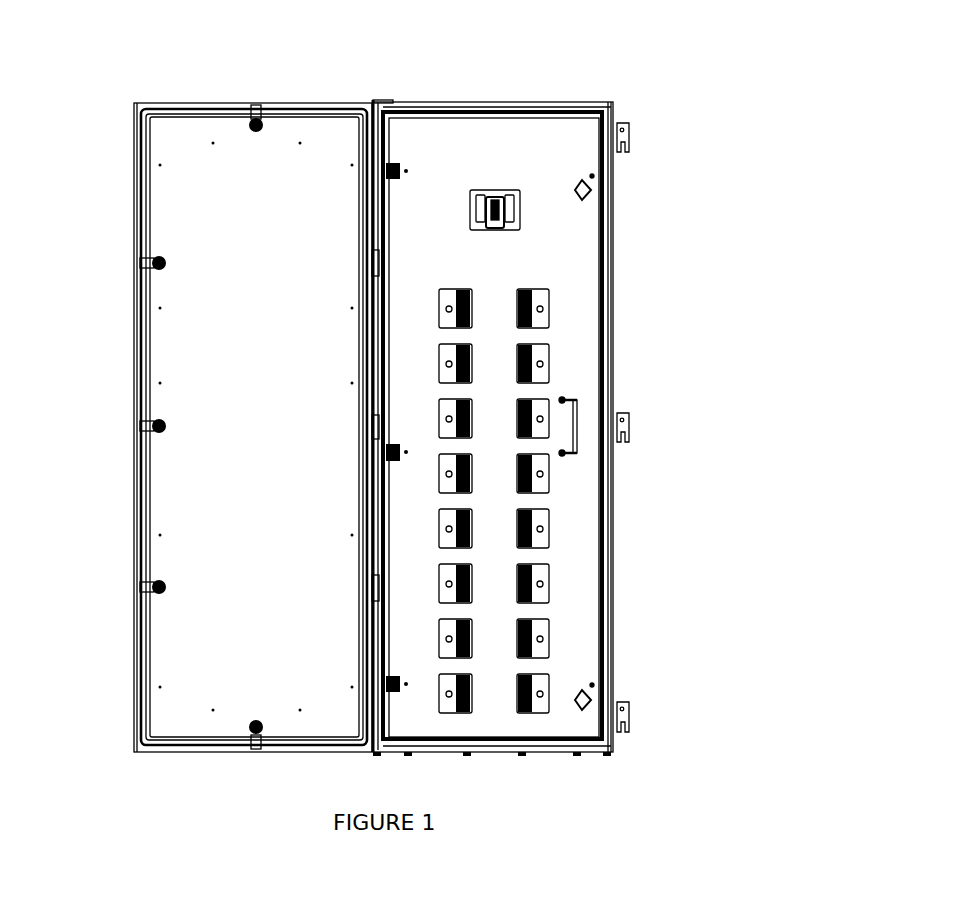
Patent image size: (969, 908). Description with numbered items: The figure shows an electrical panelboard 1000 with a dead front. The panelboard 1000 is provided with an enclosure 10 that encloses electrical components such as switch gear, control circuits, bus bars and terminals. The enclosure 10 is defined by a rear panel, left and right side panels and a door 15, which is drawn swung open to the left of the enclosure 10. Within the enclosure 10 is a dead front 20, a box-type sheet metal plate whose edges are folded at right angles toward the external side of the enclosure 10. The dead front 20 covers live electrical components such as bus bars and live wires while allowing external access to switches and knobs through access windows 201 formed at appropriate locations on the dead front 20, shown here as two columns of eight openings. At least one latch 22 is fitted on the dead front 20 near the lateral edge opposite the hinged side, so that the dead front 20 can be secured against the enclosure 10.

The electrical panelboard 1000 is at (628, 108).
The enclosure 10 is at (612, 350).
The door 15 is at (136, 452).
The dead front 20 is at (586, 548).
The access windows 201 is at (553, 632).
The latch 22 is at (590, 188).